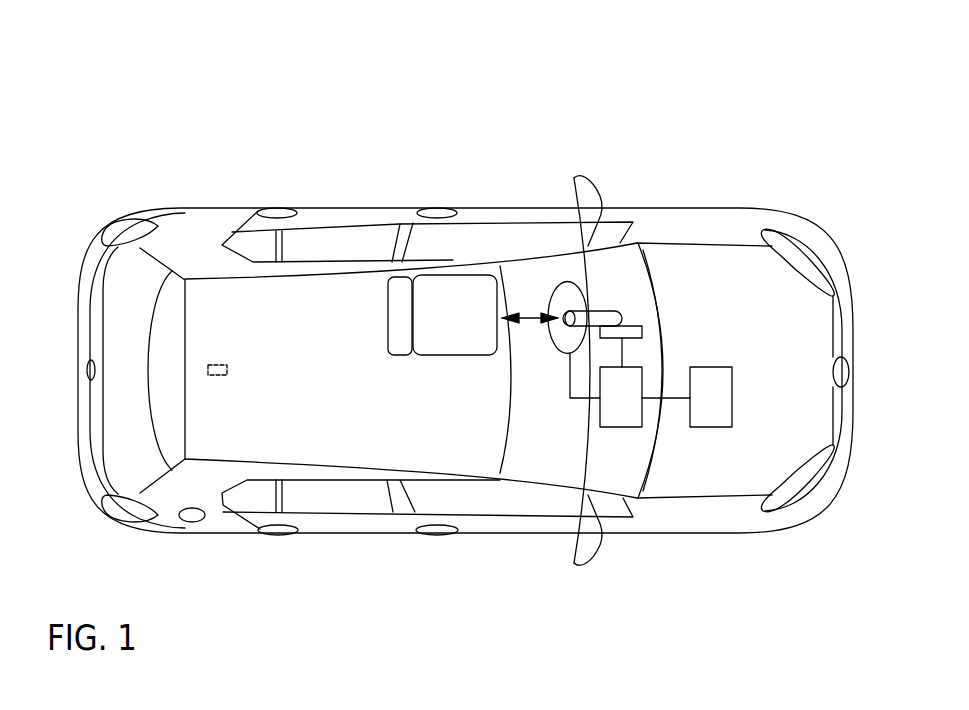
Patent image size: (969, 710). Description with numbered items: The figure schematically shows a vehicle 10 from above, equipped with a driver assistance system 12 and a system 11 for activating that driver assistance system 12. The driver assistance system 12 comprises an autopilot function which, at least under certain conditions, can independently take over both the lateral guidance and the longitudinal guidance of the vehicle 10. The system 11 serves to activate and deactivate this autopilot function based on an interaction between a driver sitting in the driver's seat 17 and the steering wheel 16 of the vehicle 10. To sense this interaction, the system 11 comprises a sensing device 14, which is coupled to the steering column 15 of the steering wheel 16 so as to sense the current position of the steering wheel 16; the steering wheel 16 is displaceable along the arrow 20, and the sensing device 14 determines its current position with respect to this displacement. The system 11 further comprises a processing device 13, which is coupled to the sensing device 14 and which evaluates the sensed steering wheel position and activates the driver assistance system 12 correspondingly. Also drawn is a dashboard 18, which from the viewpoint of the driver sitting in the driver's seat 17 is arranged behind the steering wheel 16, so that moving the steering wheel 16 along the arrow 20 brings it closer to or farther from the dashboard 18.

The vehicle 10 is at (779, 107).
The system 11 is at (567, 418).
The driver assistance system 12 is at (725, 368).
The processing device 13 is at (612, 423).
The sensing device 14 is at (642, 331).
The steering column 15 is at (603, 315).
The steering wheel 16 is at (573, 283).
The driver's seat 17 is at (427, 277).
The dashboard 18 is at (595, 461).
The arrow 20 is at (530, 313).